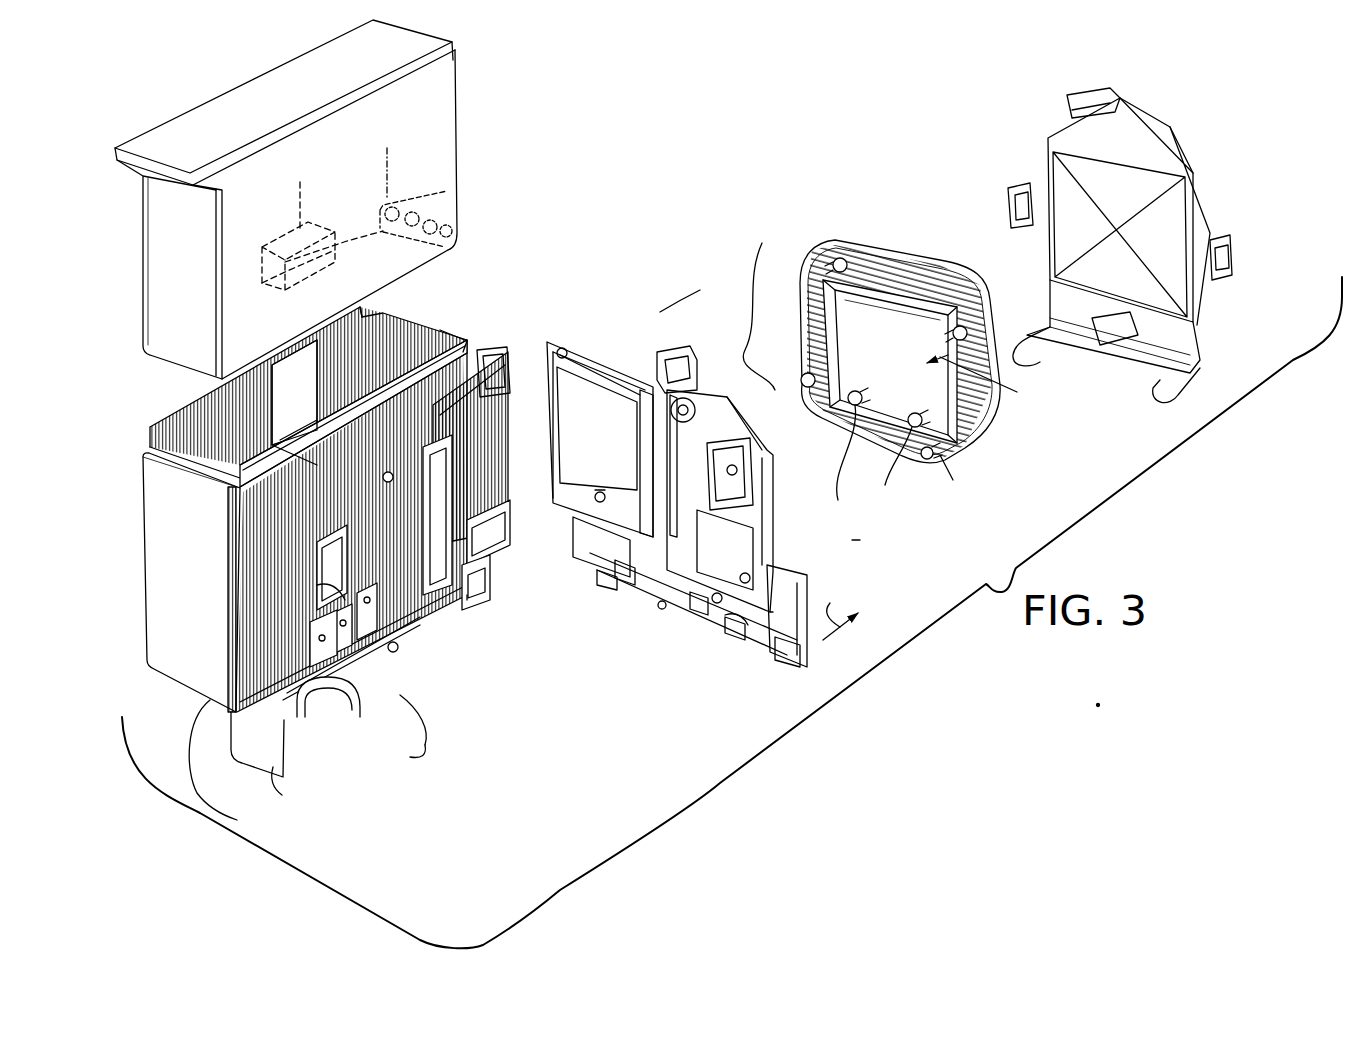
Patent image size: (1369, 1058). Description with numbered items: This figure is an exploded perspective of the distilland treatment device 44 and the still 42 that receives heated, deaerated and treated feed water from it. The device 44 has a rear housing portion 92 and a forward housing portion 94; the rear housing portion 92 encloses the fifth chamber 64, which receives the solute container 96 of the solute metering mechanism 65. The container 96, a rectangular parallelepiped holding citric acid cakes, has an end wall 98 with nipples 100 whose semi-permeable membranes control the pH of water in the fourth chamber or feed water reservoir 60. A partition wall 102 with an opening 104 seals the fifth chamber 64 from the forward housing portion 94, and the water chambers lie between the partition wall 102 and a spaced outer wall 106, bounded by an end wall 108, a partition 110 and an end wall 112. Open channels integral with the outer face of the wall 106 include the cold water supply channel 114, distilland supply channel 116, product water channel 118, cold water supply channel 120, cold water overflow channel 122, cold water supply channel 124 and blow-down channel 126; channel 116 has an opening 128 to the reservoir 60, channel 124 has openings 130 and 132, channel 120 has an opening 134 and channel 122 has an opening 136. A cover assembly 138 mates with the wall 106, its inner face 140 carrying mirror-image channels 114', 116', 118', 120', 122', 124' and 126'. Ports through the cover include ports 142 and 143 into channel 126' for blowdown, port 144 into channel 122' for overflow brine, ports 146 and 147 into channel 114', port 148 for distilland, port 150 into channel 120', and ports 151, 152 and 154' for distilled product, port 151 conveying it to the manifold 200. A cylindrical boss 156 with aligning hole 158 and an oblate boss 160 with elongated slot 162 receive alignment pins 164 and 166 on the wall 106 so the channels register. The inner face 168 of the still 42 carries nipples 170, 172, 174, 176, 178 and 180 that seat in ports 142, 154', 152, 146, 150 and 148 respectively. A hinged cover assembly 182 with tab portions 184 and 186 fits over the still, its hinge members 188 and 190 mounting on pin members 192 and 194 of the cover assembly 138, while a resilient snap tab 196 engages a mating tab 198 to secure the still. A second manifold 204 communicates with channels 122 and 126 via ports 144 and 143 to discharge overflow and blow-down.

The still 42 is at (1000, 417).
The combination distilland treatment device 44 is at (495, 657).
The fourth chamber 60 is at (828, 270).
The fifth chamber 64 is at (350, 360).
The solute metering mechanism 65 is at (400, 126).
The rear housing portion 92 is at (195, 710).
The forward housing portion 94 is at (267, 750).
The solute container 96 is at (143, 268).
The end wall 98 is at (459, 108).
The nipples 100 is at (458, 195).
The partition wall 102 is at (400, 380).
The opening 104 is at (558, 210).
The outer wall 106 is at (513, 420).
The end wall 108 is at (280, 472).
The partition 110 is at (307, 425).
The end wall 112 is at (480, 328).
The cold water supply channel 114 is at (510, 523).
The cold water supply channel 114' is at (497, 417).
The distilland supply channel 116 is at (508, 587).
The distilland supply channel 116' is at (616, 590).
The product water channel 118 is at (505, 358).
The product water channel 118' is at (599, 355).
The cold water supply channel 120 is at (361, 557).
The cold water supply channel 120' is at (784, 477).
The cold water overflow channel 122 is at (256, 638).
The cold water overflow channel 122' is at (839, 615).
The cold water supply channel 124 is at (362, 567).
The cold water supply channel 124' is at (813, 546).
The blow-down channel 126 is at (361, 733).
The blow-down channel 126' is at (791, 663).
The opening 128 is at (503, 556).
The opening 130 is at (372, 607).
The opening 132 is at (337, 682).
The opening 134 is at (343, 590).
The opening 136 is at (323, 643).
The cover assembly 138 is at (717, 320).
The inner face 140 is at (805, 381).
The port 142 is at (740, 635).
The port 143 is at (777, 660).
The port 144 is at (770, 572).
The port 146 is at (600, 490).
The port 147 is at (570, 360).
The port 148 is at (643, 387).
The port 150 is at (755, 453).
The port 151 is at (565, 345).
The port 152 is at (714, 605).
The port 154' is at (642, 622).
The cylindrical boss 156 is at (700, 408).
The cylindrical aligning hole 158 is at (692, 402).
The oblate cylindrical boss 160 is at (695, 612).
The elongated slot 162 is at (685, 530).
The alignment pin 164 is at (383, 477).
The alignment pin 166 is at (398, 650).
The inner face 168 is at (883, 303).
The nipple 170 is at (925, 460).
The nipple 172 is at (915, 428).
The nipple 174 is at (848, 398).
The nipple 176 is at (812, 327).
The nipple 178 is at (965, 325).
The nipple 180 is at (840, 258).
The hinged cover assembly 182 is at (1167, 117).
The tab portion 184 is at (1220, 237).
The tab portion 186 is at (1015, 193).
The hinge member 188 is at (1165, 394).
The hinge member 190 is at (1017, 353).
The pin member 192 is at (735, 637).
The pin member 194 is at (598, 580).
The resilient snap tab 196 is at (1087, 97).
The mating tab 198 is at (677, 358).
The manifold 200 is at (623, 282).
The second manifold 204 is at (888, 542).